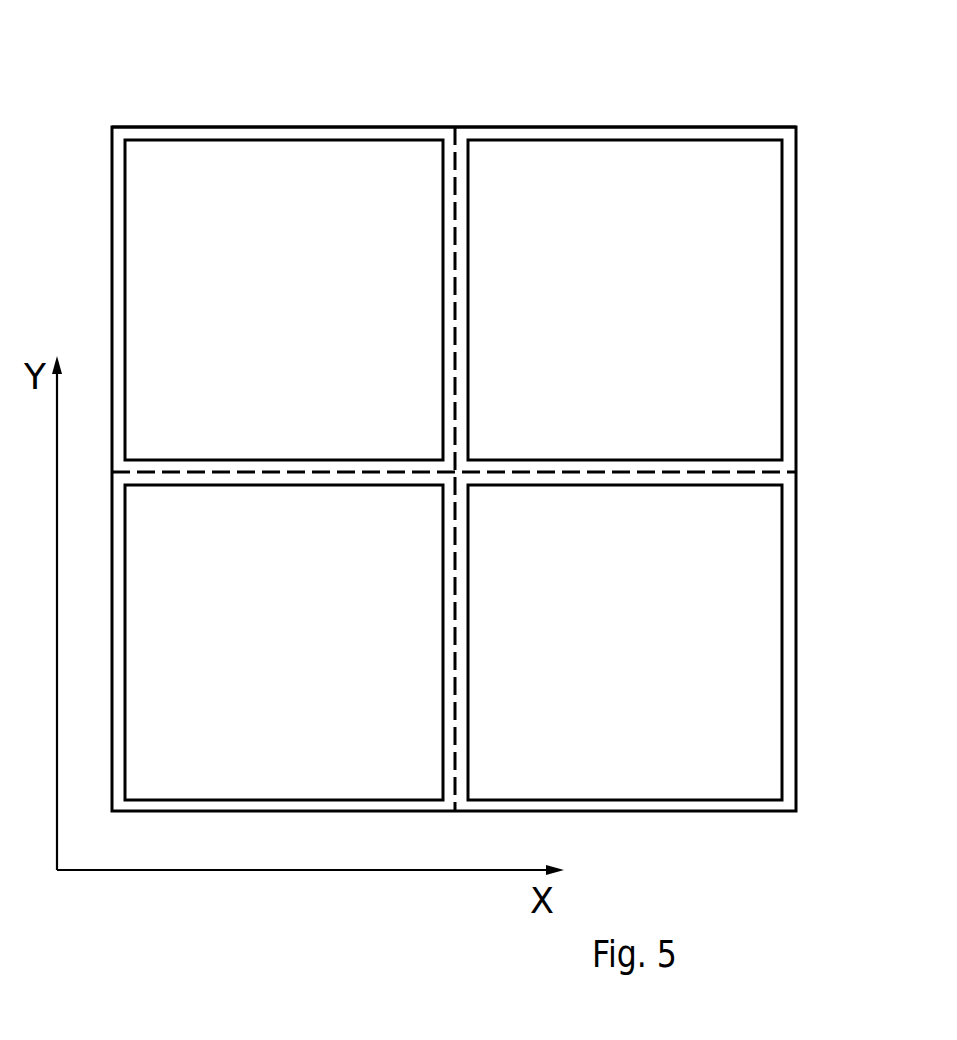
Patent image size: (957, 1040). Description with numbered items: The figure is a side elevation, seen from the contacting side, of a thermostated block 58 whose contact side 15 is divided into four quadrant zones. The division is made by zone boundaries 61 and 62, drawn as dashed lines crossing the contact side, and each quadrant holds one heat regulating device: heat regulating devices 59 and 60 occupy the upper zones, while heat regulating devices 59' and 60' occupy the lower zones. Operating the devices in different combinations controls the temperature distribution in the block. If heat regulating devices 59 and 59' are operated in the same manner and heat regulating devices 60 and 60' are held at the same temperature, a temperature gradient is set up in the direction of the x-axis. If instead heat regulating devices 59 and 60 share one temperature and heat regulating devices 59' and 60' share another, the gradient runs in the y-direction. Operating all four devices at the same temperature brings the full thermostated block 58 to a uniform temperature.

The thermostated block 58 is at (148, 121).
The contact side 15 is at (272, 140).
The heat regulating device 59 is at (251, 300).
The heat regulating device 59' is at (284, 676).
The heat regulating device 60 is at (625, 244).
The heat regulating device 60' is at (625, 675).
The zone boundary 61 is at (695, 470).
The zone boundary 62 is at (457, 208).